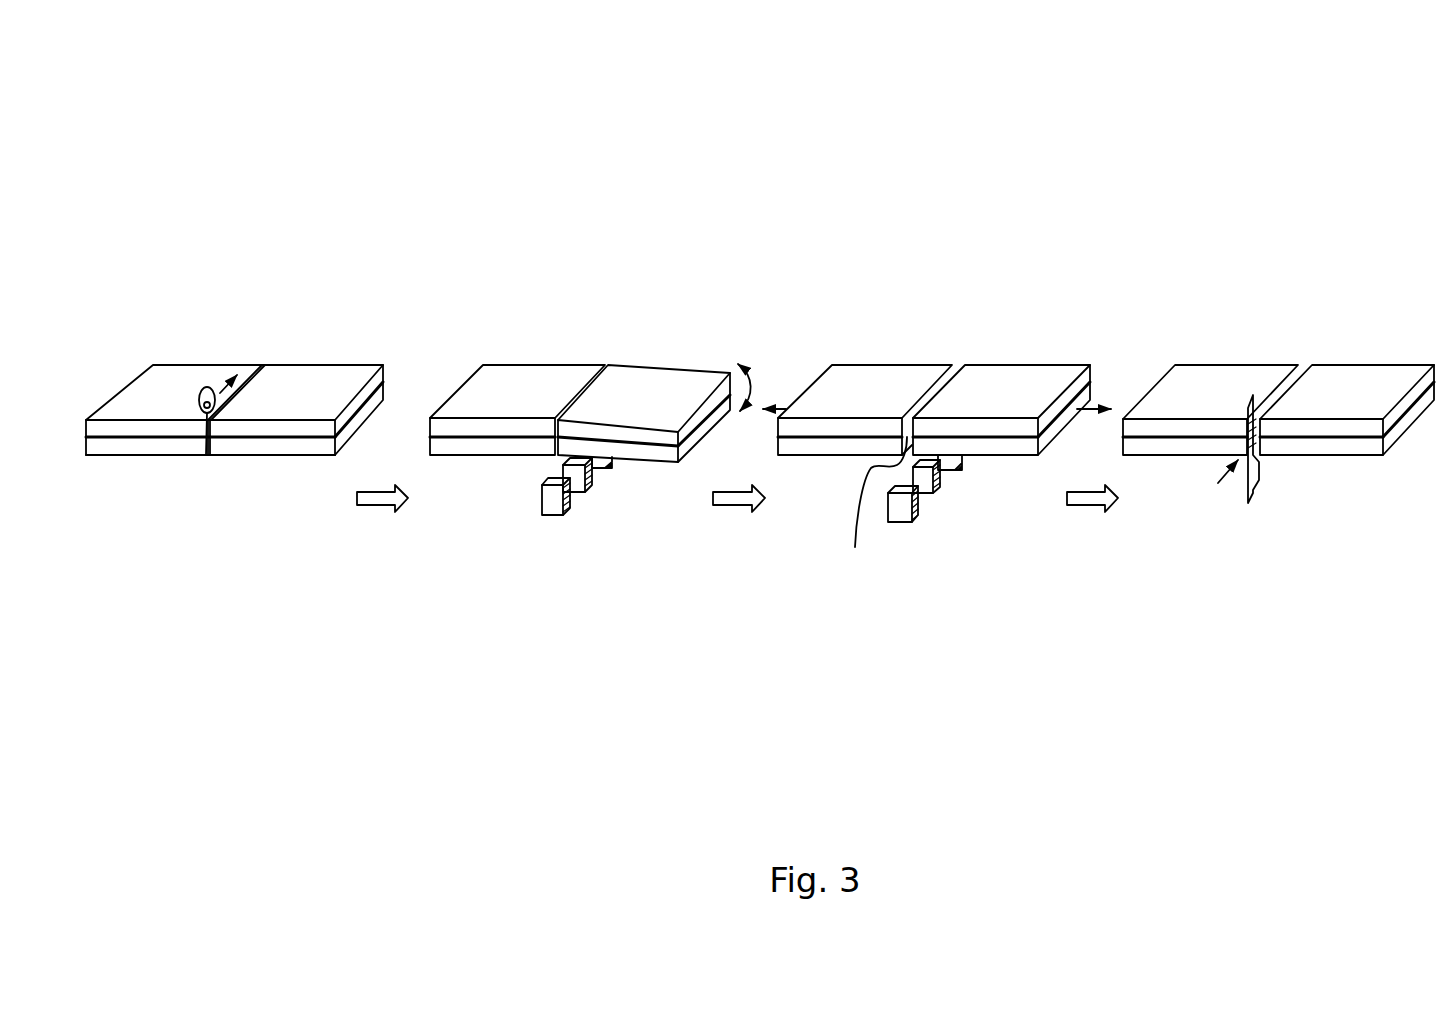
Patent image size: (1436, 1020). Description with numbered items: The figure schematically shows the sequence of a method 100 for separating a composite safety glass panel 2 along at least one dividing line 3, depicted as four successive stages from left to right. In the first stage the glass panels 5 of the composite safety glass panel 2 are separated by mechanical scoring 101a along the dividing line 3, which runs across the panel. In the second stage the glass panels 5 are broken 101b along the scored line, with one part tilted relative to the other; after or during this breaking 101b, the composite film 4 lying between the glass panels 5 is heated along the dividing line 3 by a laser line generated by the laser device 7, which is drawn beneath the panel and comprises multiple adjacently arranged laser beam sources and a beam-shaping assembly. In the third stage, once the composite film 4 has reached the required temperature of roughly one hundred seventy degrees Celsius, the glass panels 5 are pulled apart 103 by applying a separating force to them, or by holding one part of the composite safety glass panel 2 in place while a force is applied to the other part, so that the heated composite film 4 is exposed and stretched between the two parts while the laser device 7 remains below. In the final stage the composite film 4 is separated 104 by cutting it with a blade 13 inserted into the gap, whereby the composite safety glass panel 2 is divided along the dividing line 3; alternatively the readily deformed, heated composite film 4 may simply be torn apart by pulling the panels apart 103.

The method 100 is at (188, 218).
The composite safety glass panel 2 is at (158, 383).
The dividing line 3 is at (247, 387).
The glass panels 5 is at (105, 427).
The mechanical scoring 101a is at (206, 455).
The laser device 7 is at (602, 468).
The composite film 4 is at (855, 547).
The breaking 101b is at (746, 378).
The pulling apart 103 is at (786, 409).
The separating 104 is at (1218, 483).
The blade 13 is at (1255, 482).